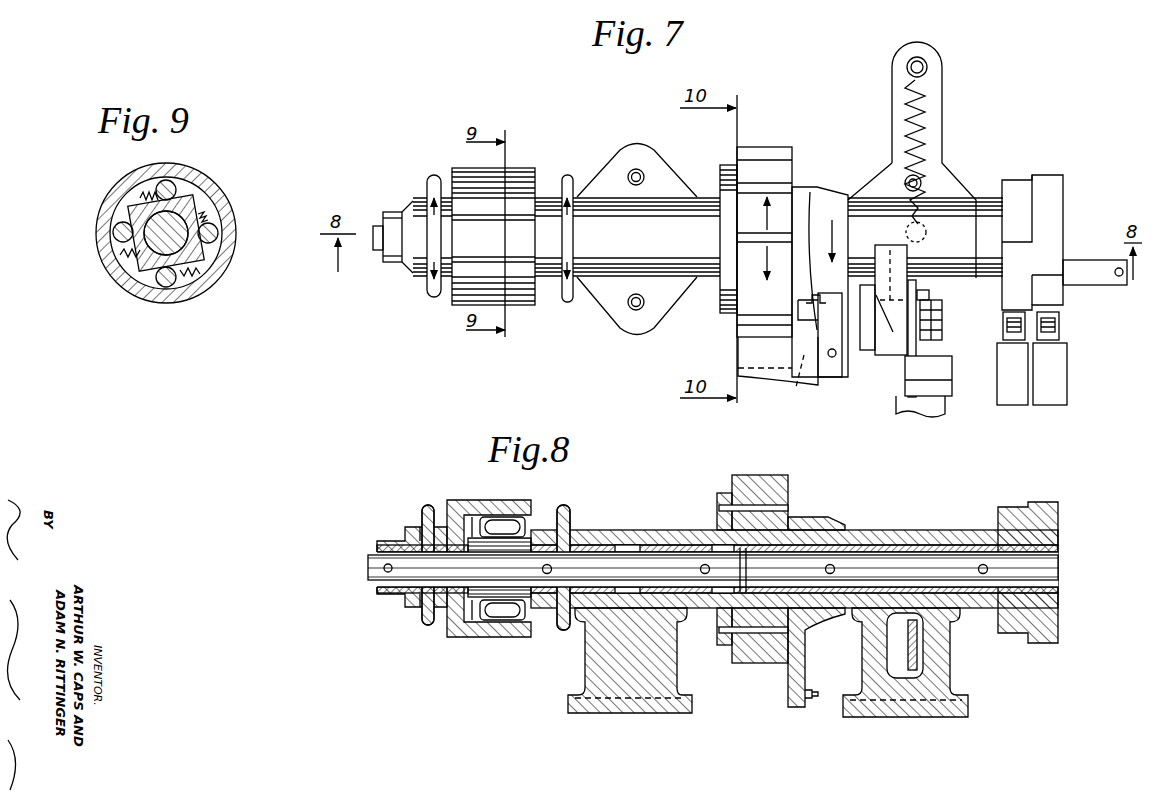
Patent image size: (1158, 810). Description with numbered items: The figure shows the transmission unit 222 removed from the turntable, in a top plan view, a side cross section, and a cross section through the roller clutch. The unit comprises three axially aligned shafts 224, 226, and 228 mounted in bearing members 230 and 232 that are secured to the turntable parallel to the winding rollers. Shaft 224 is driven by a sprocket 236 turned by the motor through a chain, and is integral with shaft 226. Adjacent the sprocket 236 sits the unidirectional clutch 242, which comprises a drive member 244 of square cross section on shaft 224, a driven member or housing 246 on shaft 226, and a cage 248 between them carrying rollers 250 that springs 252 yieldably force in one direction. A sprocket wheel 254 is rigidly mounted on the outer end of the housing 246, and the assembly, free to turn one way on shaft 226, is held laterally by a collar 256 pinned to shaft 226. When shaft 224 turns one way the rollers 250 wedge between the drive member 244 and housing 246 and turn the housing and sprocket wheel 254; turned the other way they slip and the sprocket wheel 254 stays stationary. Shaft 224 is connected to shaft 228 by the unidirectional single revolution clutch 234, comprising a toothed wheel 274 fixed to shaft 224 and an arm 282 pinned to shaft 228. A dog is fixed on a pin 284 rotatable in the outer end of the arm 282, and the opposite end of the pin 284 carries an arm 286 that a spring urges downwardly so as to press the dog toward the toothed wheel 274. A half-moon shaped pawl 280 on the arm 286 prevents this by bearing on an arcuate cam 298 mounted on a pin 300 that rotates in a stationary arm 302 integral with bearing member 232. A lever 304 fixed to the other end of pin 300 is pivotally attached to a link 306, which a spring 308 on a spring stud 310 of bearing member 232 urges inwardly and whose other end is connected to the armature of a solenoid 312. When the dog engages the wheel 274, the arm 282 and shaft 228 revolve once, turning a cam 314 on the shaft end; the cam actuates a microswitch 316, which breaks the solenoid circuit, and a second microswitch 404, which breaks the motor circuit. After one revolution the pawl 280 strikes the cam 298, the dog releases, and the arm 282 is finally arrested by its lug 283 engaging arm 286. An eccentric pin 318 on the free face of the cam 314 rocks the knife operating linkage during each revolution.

In FIG. 7, the transmission unit 222 is at (747, 228).
In FIG. 8, the transmission unit 222 is at (710, 588).
In FIG. 9, the shaft 224 is at (120, 268).
In FIG. 7, the shaft 224 is at (708, 237).
In FIG. 8, the shaft 224 is at (622, 562).
In FIG. 8, the shaft 226 is at (372, 568).
In FIG. 8, the shaft 228 is at (1052, 570).
In FIG. 7, the bearing member 230 is at (612, 302).
In FIG. 8, the bearing member 230 is at (598, 664).
In FIG. 7, the bearing member 232 is at (942, 288).
In FIG. 8, the bearing member 232 is at (923, 674).
In FIG. 7, the unidirectional single revolution clutch 234 is at (727, 322).
In FIG. 8, the unidirectional single revolution clutch 234 is at (720, 490).
In FIG. 7, the sprocket 236 is at (571, 180).
In FIG. 8, the sprocket 236 is at (571, 512).
In FIG. 9, the unidirectional clutch 242 is at (172, 219).
In FIG. 7, the unidirectional clutch 242 is at (517, 215).
In FIG. 8, the unidirectional clutch 242 is at (434, 550).
In FIG. 9, the drive member 244 is at (135, 262).
In FIG. 8, the drive member 244 is at (470, 600).
In FIG. 9, the housing 246 is at (228, 261).
In FIG. 7, the housing 246 is at (522, 302).
In FIG. 8, the housing 246 is at (512, 628).
In FIG. 8, the cage 248 is at (472, 515).
In FIG. 9, the rollers 250 is at (216, 232).
In FIG. 9, the springs 252 is at (184, 268).
In FIG. 7, the sprocket wheel 254 is at (431, 185).
In FIG. 8, the sprocket wheel 254 is at (425, 522).
In FIG. 7, the collar 256 is at (400, 258).
In FIG. 8, the collar 256 is at (383, 549).
In FIG. 7, the toothed wheel 274 is at (770, 157).
In FIG. 8, the toothed wheel 274 is at (758, 480).
In FIG. 7, the pawl 280 is at (803, 294).
In FIG. 8, the pawl 280 is at (789, 612).
In FIG. 7, the arm 282 is at (778, 380).
In FIG. 8, the arm 282 is at (790, 685).
In FIG. 7, the lug 283 is at (830, 328).
In FIG. 7, the pin 284 is at (766, 382).
In FIG. 7, the arm 286 is at (832, 298).
In FIG. 7, the cam 298 is at (878, 356).
In FIG. 7, the pin 300 is at (894, 288).
In FIG. 7, the stationary arm 302 is at (936, 320).
In FIG. 7, the lever 304 is at (914, 332).
In FIG. 7, the link 306 is at (922, 372).
In FIG. 8, the link 306 is at (912, 655).
In FIG. 7, the spring 308 is at (924, 140).
In FIG. 7, the spring stud 310 is at (920, 62).
In FIG. 7, the solenoid 312 is at (906, 408).
In FIG. 7, the cam 314 is at (1046, 185).
In FIG. 8, the cam 314 is at (1046, 510).
In FIG. 7, the microswitch 316 is at (1016, 392).
In FIG. 7, the eccentric pin 318 is at (1092, 267).
In FIG. 7, the second microswitch 404 is at (1058, 378).